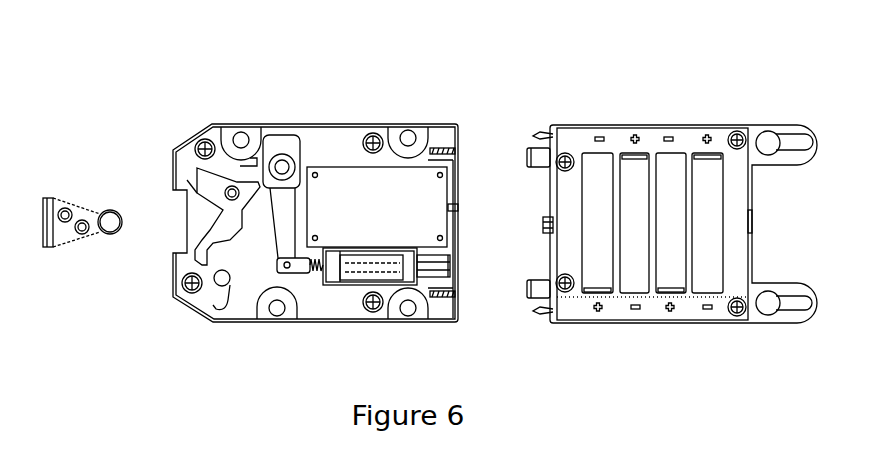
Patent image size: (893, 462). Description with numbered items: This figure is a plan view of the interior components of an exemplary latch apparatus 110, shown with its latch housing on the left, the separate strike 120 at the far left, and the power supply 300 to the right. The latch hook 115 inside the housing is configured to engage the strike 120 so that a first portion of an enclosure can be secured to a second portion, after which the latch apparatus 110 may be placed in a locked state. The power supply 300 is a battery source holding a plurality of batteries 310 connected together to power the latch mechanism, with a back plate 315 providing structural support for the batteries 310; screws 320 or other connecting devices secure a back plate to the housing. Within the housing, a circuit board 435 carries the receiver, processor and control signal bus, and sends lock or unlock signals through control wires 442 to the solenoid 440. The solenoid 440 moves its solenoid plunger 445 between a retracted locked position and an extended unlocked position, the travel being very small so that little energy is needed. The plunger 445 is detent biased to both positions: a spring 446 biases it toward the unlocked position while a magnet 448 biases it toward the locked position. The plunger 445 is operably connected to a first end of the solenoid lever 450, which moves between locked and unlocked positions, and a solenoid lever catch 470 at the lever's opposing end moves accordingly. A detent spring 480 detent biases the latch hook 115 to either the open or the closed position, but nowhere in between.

The latch apparatus 110 is at (457, 80).
The latch hook 115 is at (197, 190).
The strike 120 is at (53, 250).
The power supply 300 is at (590, 126).
The batteries 310 is at (673, 158).
The back plate 315 is at (686, 308).
The screws 320 is at (748, 127).
The circuit board 435 is at (440, 185).
The solenoid 440 is at (383, 276).
The control wires 442 is at (447, 260).
The solenoid plunger 445 is at (256, 316).
The spring 446 is at (315, 275).
The magnet 448 is at (335, 276).
The solenoid lever 450 is at (293, 143).
The solenoid lever catch 470 is at (248, 157).
The detent spring 480 is at (198, 309).